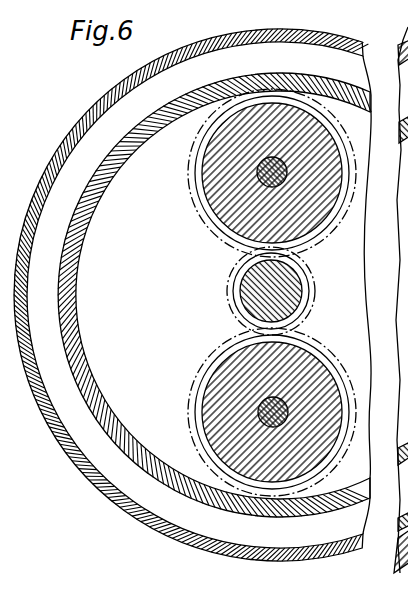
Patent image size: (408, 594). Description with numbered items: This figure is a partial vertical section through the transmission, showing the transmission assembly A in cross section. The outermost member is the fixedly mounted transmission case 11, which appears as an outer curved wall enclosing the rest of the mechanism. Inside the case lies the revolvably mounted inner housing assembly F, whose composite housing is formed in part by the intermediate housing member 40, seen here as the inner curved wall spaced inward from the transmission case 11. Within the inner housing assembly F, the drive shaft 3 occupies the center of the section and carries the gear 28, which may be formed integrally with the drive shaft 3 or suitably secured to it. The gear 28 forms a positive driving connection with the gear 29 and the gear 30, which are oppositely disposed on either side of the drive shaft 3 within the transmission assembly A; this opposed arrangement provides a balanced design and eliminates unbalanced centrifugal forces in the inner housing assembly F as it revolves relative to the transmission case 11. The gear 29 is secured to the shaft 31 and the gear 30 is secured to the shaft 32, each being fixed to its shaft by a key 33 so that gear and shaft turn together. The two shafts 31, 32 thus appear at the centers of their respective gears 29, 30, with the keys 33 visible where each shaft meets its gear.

The transmission assembly A is at (90, 103).
The transmission case 11 is at (71, 128).
The inner housing assembly F is at (100, 428).
The intermediate housing member 40 is at (110, 450).
The gear 29 is at (189, 180).
The shaft 31 is at (282, 183).
The gear 30 is at (189, 404).
The shaft 32 is at (287, 400).
The key 33 is at (269, 155).
The gear 28 is at (226, 306).
The drive shaft 3 is at (255, 291).